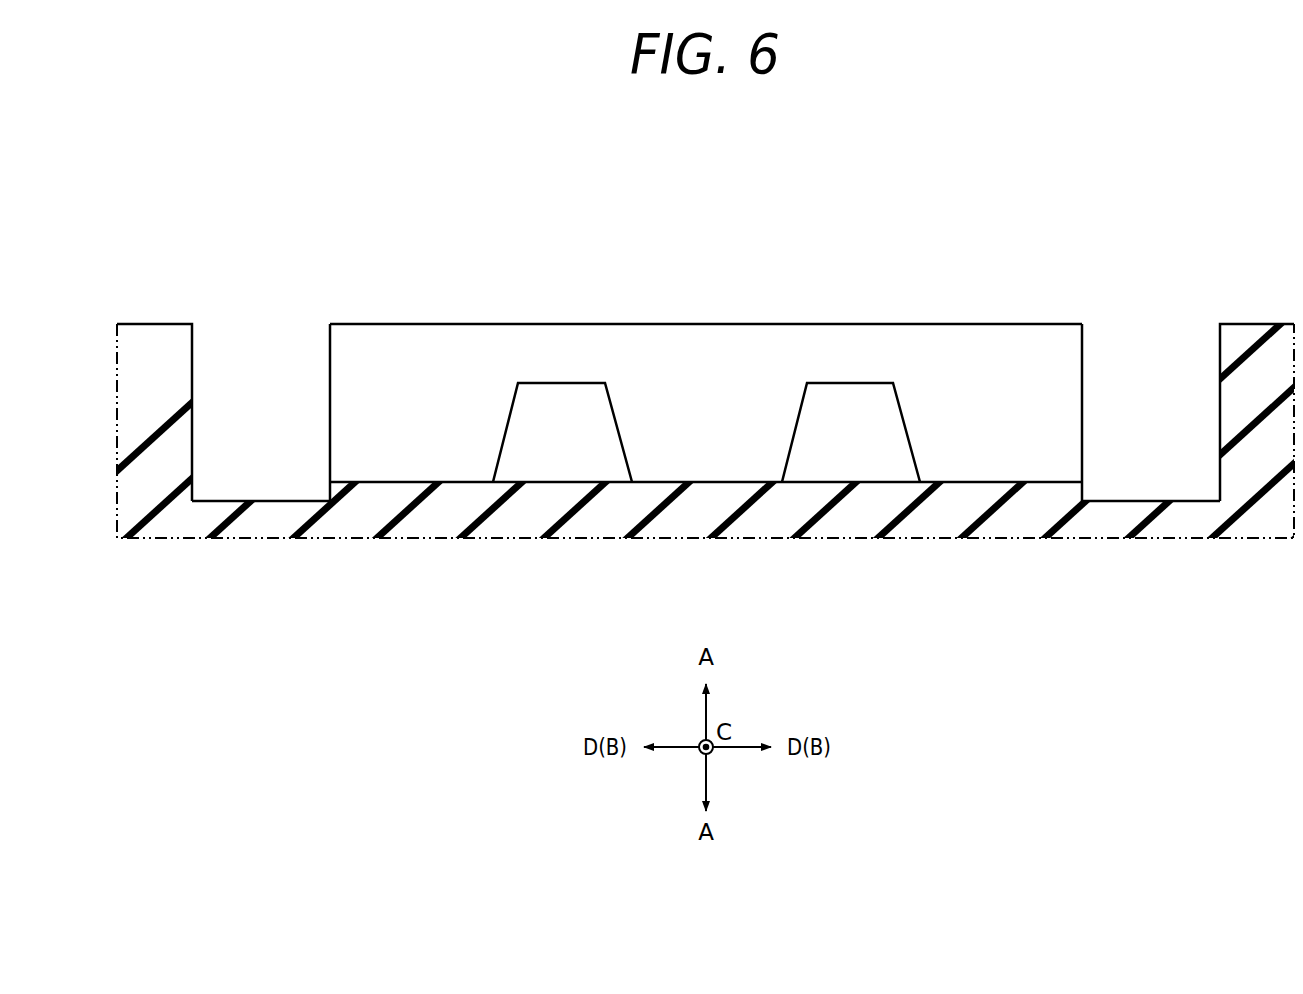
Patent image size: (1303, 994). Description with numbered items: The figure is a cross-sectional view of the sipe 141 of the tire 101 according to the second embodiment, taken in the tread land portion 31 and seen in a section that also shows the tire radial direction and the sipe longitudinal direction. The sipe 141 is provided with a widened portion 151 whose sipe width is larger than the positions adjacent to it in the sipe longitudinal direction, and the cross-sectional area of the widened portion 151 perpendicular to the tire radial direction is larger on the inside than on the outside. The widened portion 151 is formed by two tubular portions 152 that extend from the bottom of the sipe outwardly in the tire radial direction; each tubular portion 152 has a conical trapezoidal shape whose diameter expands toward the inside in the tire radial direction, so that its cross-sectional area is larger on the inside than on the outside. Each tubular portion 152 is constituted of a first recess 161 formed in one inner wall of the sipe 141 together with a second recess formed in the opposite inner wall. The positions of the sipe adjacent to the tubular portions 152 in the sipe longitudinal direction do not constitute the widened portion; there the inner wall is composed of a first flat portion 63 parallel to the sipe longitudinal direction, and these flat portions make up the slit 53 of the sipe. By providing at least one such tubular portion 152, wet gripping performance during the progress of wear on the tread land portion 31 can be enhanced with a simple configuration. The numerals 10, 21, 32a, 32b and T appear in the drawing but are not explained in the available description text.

The tire 101 is at (1045, 175).
The substrate 10 is at (661, 416).
The recess 21 is at (262, 342).
The tread land portion 31 is at (701, 379).
The central wall portion 32a is at (1003, 307).
The side wall portion 32b is at (155, 317).
The sipe 141 is at (733, 345).
The slit 53 is at (1045, 341).
The top plate T is at (423, 324).
The first recess 161 is at (563, 402).
The tubular portion 152 is at (563, 462).
The widened portion 151 is at (699, 537).
The first flat portion 63 is at (722, 452).